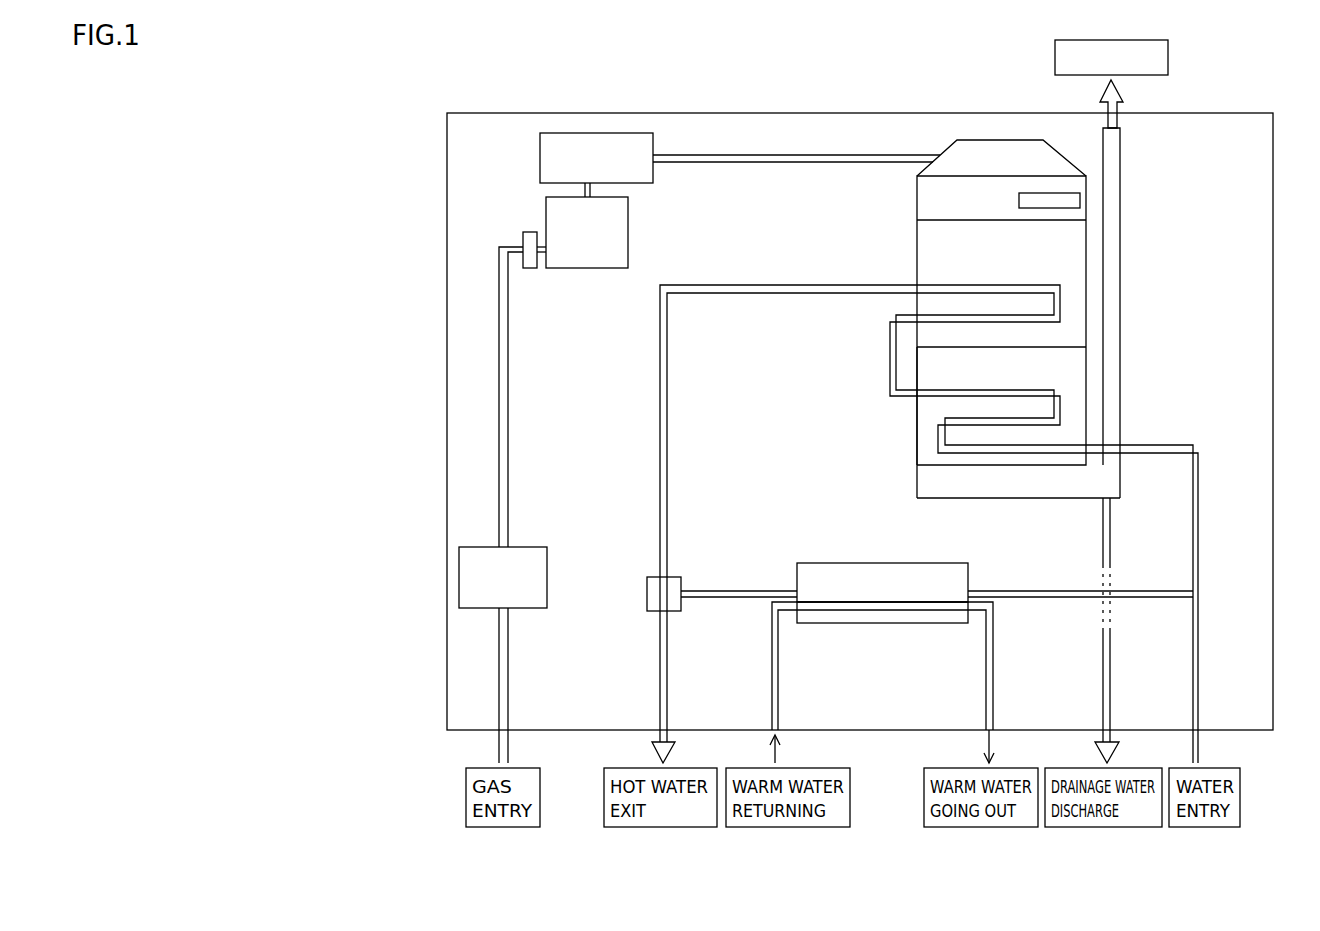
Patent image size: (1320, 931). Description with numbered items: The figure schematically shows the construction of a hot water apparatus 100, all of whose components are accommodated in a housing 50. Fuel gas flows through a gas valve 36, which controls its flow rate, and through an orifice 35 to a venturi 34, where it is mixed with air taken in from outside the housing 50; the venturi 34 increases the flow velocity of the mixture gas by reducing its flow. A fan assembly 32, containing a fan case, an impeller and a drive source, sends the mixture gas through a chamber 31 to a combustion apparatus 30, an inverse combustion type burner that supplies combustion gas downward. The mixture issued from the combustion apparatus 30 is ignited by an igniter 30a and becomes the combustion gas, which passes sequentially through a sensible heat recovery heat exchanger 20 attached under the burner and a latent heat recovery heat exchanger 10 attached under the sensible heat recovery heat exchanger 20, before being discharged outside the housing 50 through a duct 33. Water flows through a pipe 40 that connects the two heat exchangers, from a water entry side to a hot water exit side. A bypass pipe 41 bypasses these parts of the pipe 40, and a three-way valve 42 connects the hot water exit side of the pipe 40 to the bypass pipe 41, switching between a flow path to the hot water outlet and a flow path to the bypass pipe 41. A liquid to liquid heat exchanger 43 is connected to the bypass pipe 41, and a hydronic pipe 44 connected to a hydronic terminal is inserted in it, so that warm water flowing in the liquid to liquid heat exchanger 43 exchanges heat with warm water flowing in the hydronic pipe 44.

The hot water apparatus 100 is at (999, 83).
The housing 50 is at (1273, 231).
The latent heat recovery heat exchanger 10 is at (917, 432).
The sensible heat recovery heat exchanger 20 is at (917, 248).
The combustion apparatus 30 is at (917, 200).
The igniter 30a is at (1080, 199).
The chamber 31 is at (944, 153).
The fan assembly 32 is at (655, 137).
The duct 33 is at (1120, 300).
The venturi 34 is at (628, 230).
The orifice 35 is at (530, 268).
The gas valve 36 is at (547, 577).
The pipe 40 is at (667, 467).
The bypass pipe 41 is at (1047, 590).
The three-way valve 42 is at (647, 596).
The liquid to liquid heat exchanger 43 is at (882, 563).
The hydronic pipe 44 is at (772, 667).